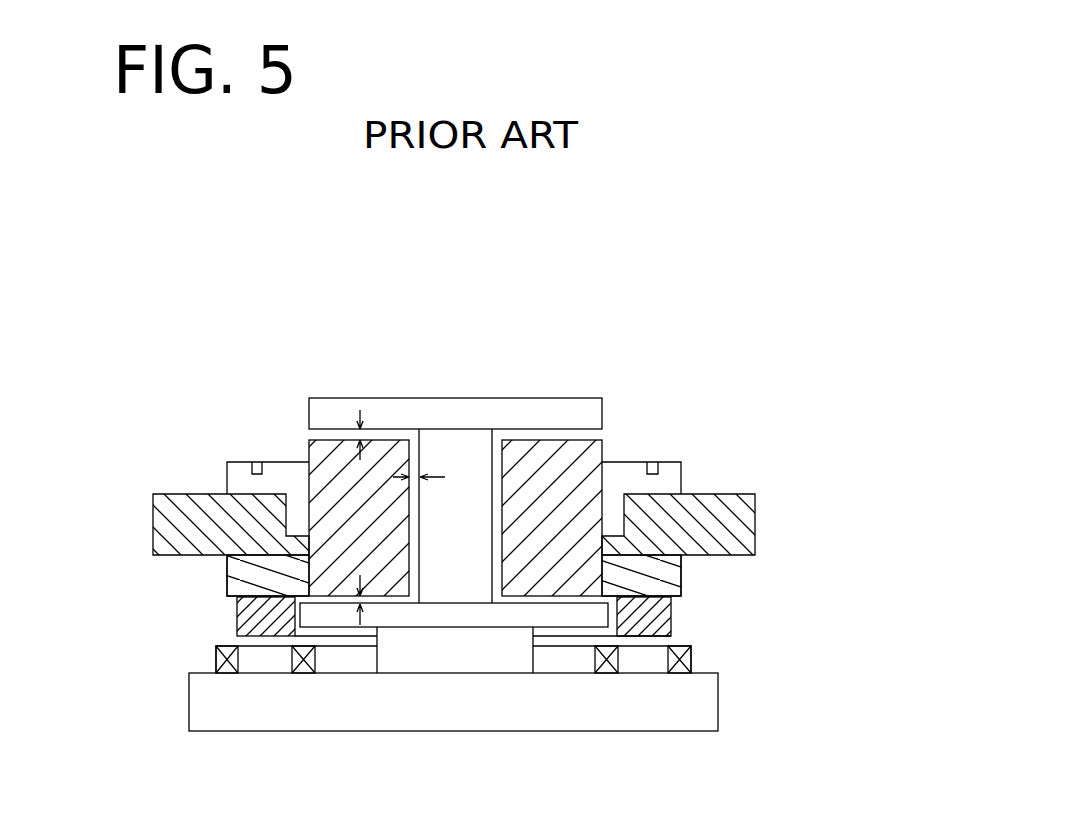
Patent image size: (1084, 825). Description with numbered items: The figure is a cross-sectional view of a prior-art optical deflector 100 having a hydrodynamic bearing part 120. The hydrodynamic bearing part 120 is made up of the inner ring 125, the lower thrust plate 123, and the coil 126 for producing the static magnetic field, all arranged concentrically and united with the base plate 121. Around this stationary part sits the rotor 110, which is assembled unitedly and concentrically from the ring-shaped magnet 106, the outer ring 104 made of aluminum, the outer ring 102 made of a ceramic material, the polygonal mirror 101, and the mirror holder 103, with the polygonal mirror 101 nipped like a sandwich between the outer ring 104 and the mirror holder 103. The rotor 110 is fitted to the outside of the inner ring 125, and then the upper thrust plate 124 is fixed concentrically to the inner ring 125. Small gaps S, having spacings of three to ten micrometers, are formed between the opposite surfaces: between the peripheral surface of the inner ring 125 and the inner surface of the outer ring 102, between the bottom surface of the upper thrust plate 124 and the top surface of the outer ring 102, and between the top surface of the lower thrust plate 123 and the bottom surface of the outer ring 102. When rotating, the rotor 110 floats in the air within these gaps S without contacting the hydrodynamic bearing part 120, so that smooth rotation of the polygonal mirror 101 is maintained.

The spindle motor (prior art) 100 is at (509, 306).
The polygonal mirror 101 is at (755, 535).
The outer ring made of a ceramic material 102 is at (593, 452).
The mirror holder 103 is at (683, 470).
The outer ring made of aluminum 104 is at (682, 575).
The ring-shaped magnet 106 is at (672, 615).
The rotor 110 is at (537, 524).
The hydrodynamic bearing part 120 is at (400, 395).
The base plate 121 is at (595, 717).
The lower thrust plate 123 is at (446, 618).
The upper thrust plate 124 is at (545, 398).
The inner ring 125 is at (460, 438).
The coil 126 is at (692, 655).
The gap S is at (357, 433).